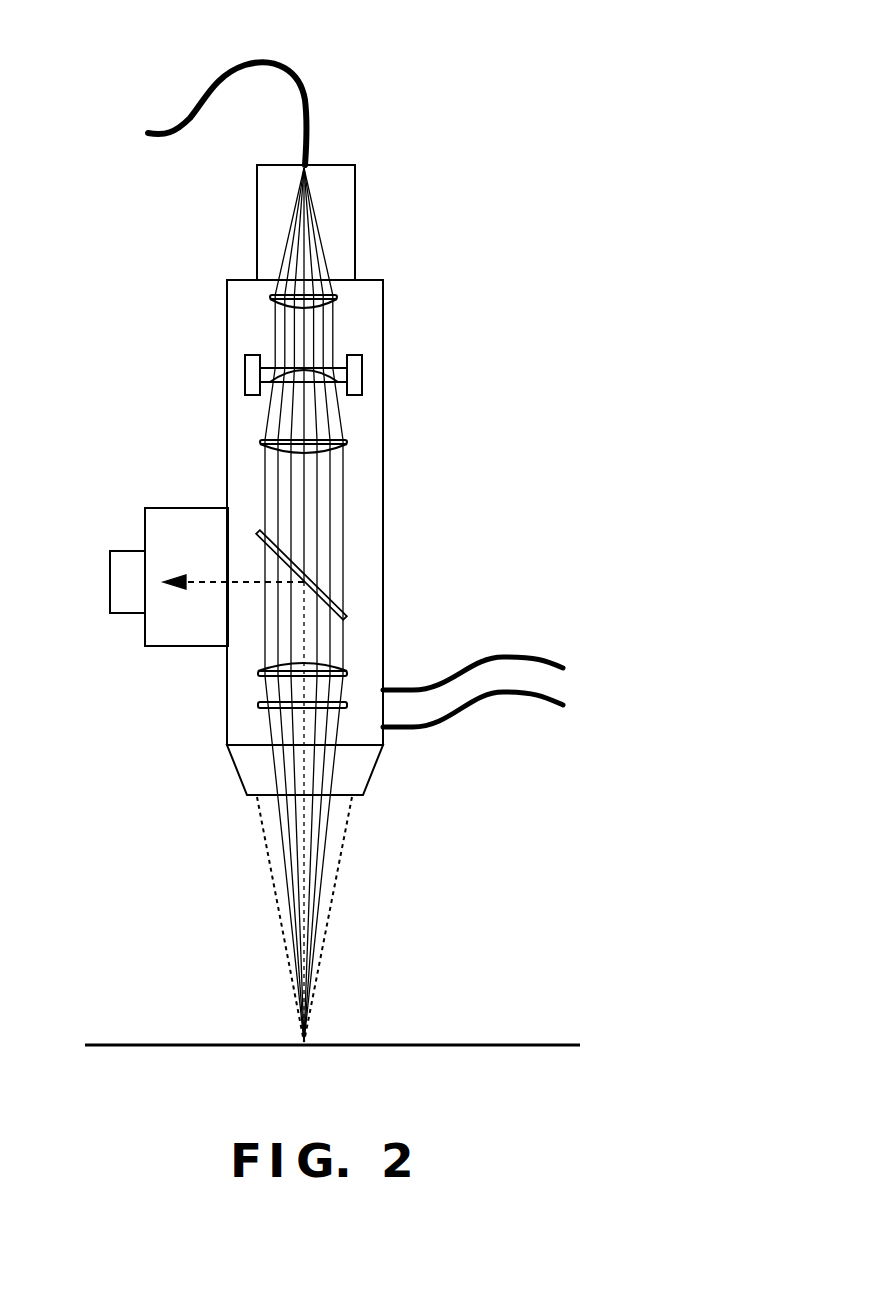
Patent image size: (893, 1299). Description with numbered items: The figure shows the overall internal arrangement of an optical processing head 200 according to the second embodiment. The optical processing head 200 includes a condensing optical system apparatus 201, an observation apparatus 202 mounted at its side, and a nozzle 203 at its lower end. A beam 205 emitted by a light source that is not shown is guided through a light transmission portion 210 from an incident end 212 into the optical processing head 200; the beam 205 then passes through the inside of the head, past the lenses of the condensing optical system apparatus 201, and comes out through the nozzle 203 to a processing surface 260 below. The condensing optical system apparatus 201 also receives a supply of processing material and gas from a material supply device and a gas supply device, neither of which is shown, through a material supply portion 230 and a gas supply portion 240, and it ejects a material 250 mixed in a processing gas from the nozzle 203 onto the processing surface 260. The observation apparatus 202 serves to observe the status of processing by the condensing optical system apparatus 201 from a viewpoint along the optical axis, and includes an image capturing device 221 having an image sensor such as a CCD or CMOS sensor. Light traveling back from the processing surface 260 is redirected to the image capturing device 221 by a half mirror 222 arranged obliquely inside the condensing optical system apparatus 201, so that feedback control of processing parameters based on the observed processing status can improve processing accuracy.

The optical processing head 200 is at (141, 228).
The light transmission portion 210 is at (203, 72).
The incident end 212 is at (308, 163).
The condensing optical system apparatus 201 is at (383, 335).
The observation apparatus 202 is at (162, 508).
The image capturing device 221 is at (118, 568).
The half mirror 222 is at (345, 618).
The beam 205 is at (373, 501).
The nozzle 203 is at (372, 772).
The material supply portion 230 is at (512, 652).
The gas supply portion 240 is at (520, 700).
The material 250 is at (327, 925).
The processing surface 260 is at (477, 1043).